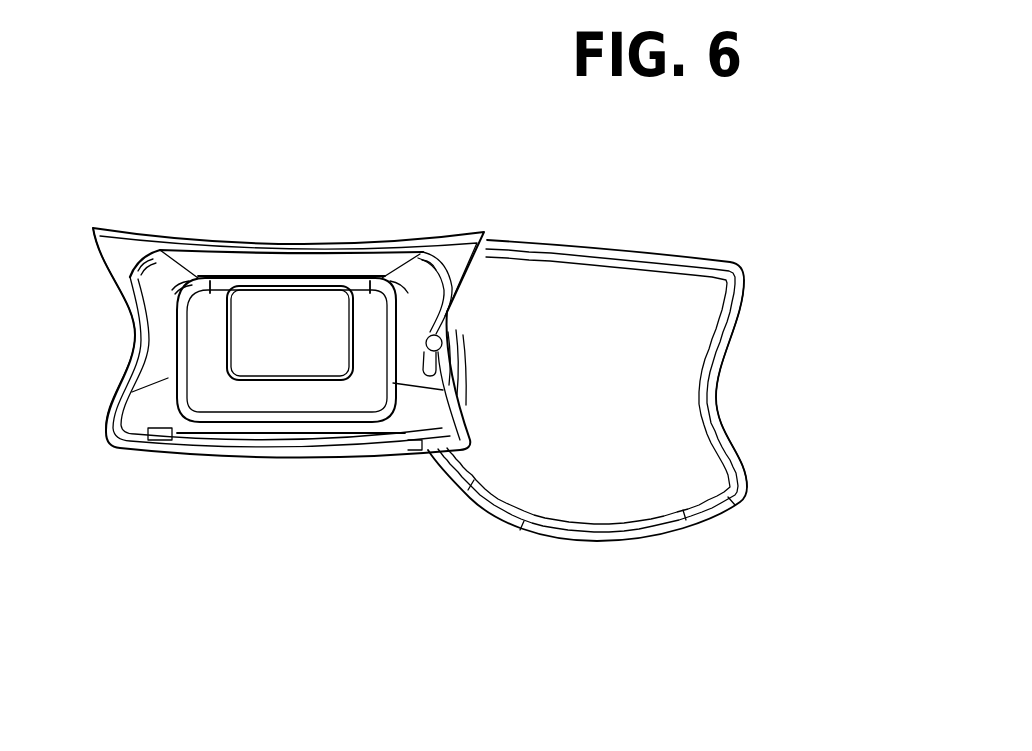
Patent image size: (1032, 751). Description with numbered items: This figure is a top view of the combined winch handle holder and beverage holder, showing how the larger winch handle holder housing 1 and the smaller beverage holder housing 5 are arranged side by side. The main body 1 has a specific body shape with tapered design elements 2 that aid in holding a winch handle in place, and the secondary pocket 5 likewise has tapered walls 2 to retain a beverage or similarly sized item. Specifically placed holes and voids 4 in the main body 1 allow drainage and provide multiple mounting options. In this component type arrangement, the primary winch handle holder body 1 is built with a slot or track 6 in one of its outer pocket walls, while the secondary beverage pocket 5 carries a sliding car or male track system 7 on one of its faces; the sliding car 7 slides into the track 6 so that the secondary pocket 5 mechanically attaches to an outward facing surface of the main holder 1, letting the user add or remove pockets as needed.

The winch handle holder housing 1 is at (208, 460).
The tapered design elements 2 is at (148, 343).
The holes and voids 4 is at (287, 323).
The beverage holder housing 5 is at (572, 480).
The slot/track 6 is at (420, 353).
The sliding car track system 7 is at (440, 340).